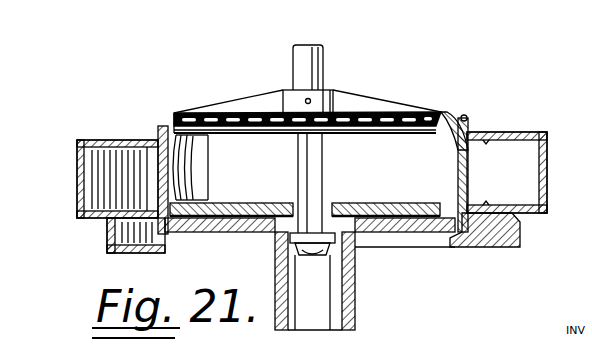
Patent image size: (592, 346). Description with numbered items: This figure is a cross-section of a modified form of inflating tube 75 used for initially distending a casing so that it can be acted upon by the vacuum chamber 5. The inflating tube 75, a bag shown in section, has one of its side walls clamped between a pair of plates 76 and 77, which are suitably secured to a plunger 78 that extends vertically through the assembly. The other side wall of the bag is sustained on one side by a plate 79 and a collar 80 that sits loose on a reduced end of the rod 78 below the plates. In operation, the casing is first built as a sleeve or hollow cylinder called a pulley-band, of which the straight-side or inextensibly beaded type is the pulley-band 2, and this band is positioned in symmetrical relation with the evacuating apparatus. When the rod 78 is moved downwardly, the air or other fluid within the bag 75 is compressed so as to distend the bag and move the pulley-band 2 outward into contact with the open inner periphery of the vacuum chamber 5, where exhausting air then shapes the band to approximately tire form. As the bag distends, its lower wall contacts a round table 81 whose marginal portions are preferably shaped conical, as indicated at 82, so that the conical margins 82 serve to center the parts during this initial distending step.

The straight-side type pulley-band 2 is at (157, 131).
The vacuum chamber 5 is at (547, 211).
The inflating tube 75 is at (450, 140).
The plate 76 is at (240, 114).
The plate 77 is at (248, 134).
The plunger 78 is at (313, 75).
The plate 79 is at (366, 203).
The collar 80 is at (323, 254).
The round table 81 is at (404, 233).
The conical marginal portions 82 is at (444, 236).